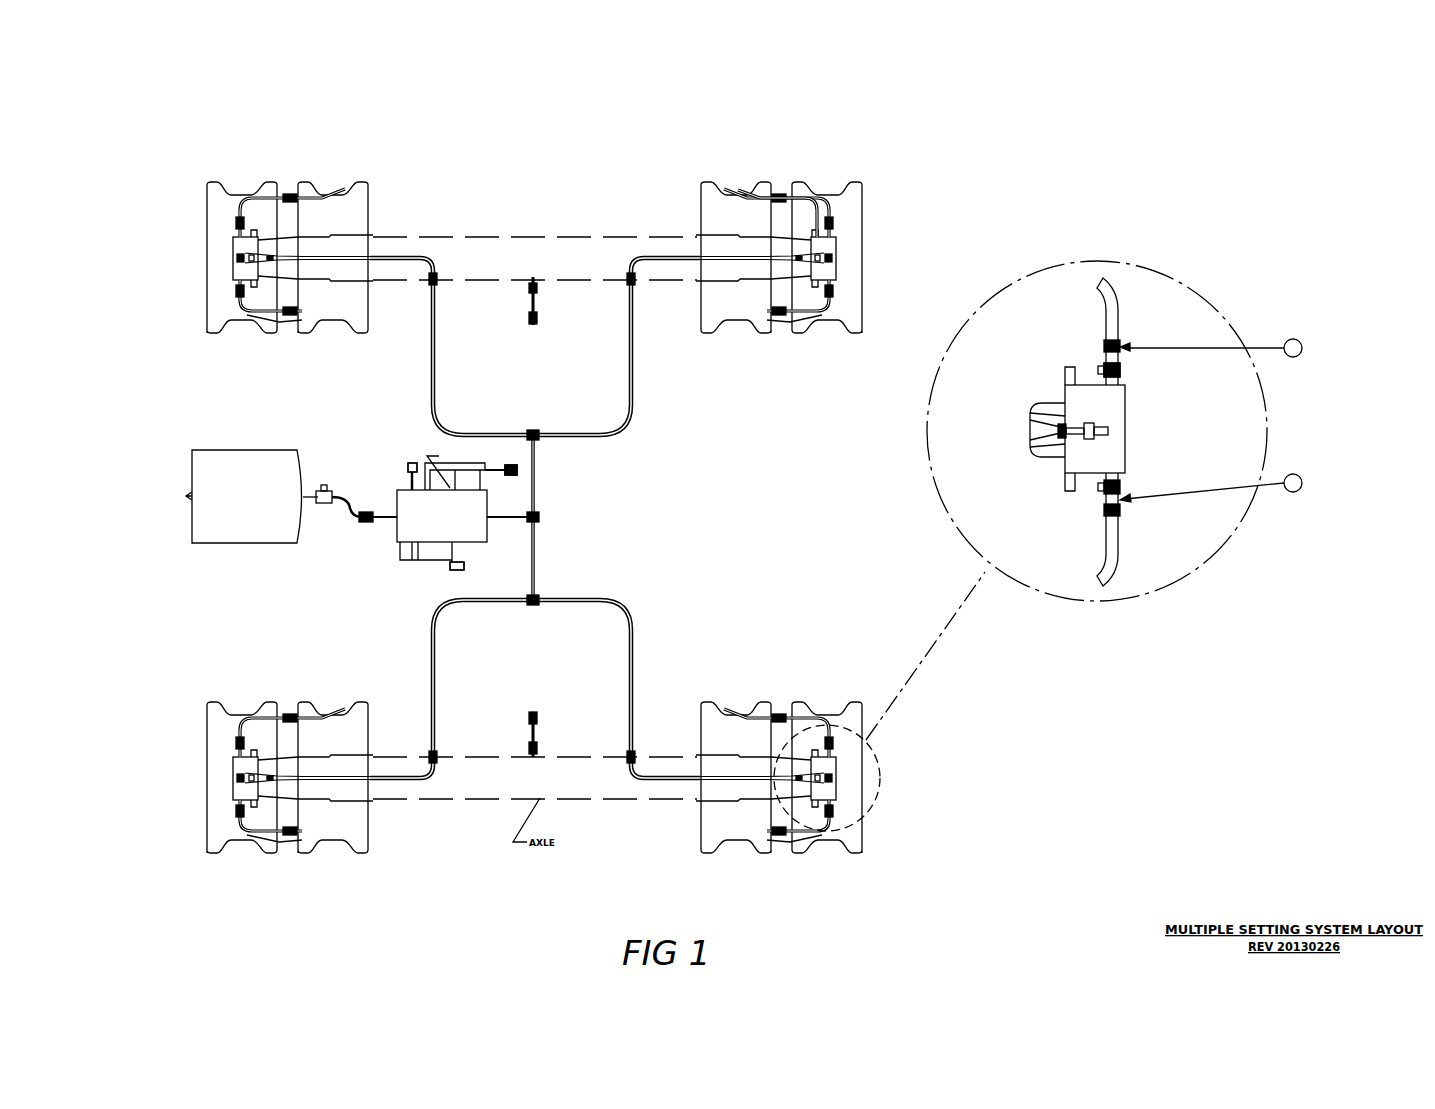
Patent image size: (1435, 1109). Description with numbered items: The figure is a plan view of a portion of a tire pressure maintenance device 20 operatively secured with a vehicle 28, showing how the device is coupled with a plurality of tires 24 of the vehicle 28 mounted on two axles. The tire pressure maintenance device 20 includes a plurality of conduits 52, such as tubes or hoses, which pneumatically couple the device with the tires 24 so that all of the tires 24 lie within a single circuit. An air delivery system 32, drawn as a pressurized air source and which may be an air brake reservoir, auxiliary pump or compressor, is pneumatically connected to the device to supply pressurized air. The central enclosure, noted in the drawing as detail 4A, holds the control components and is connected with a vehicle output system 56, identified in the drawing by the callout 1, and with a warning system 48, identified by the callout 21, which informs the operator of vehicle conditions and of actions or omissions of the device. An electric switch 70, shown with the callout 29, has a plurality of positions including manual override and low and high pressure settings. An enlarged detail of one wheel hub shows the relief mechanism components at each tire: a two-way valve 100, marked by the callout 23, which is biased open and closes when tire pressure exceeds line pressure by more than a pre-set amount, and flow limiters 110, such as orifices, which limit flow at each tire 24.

The tire pressure maintenance device 20 is at (548, 198).
The tire 24 is at (215, 295).
The vehicle 28 is at (816, 185).
The conduits 52 is at (632, 360).
The air delivery system 32 is at (218, 545).
The vehicle output system 56 is at (407, 467).
The warning system 48 is at (518, 471).
The electric switch 70 is at (448, 576).
The two-way valve 100 is at (1120, 491).
The flow limiter 110 is at (1266, 432).
The vehicle output device callout 1 is at (411, 463).
The warning light panel callout 21 is at (560, 477).
The 3 way switch callout 29 is at (452, 570).
The 2 way valve callout 23 is at (1203, 393).
The enclosure 4A is at (457, 493).